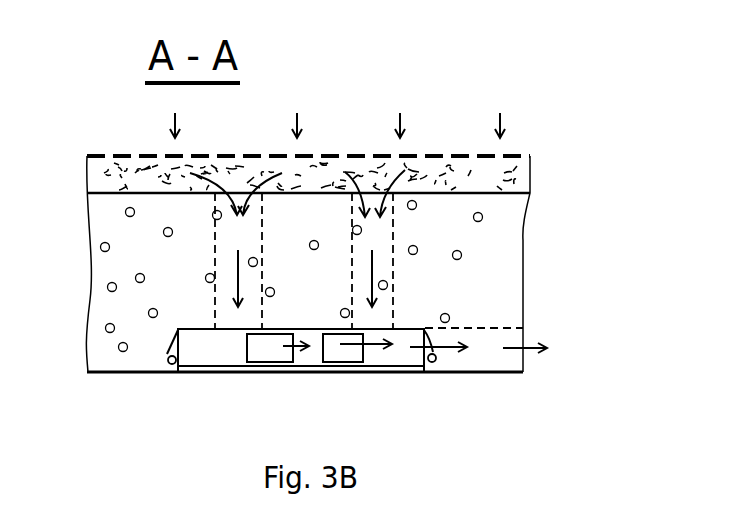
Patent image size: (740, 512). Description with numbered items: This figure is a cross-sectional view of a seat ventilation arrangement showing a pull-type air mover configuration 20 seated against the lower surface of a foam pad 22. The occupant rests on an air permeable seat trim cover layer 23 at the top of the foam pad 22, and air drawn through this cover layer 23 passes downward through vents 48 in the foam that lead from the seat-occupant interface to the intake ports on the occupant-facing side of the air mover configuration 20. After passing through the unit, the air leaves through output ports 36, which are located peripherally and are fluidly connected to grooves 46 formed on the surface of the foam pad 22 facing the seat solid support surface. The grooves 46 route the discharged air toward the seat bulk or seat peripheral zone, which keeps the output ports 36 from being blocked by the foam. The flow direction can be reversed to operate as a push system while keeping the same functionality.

The air mover configuration 20 is at (221, 360).
The foam pad 22 is at (500, 277).
The air permeable seat trim cover layer 23 is at (510, 173).
The output port 36 is at (340, 353).
The groove 46 is at (512, 338).
The vent 48 is at (245, 233).